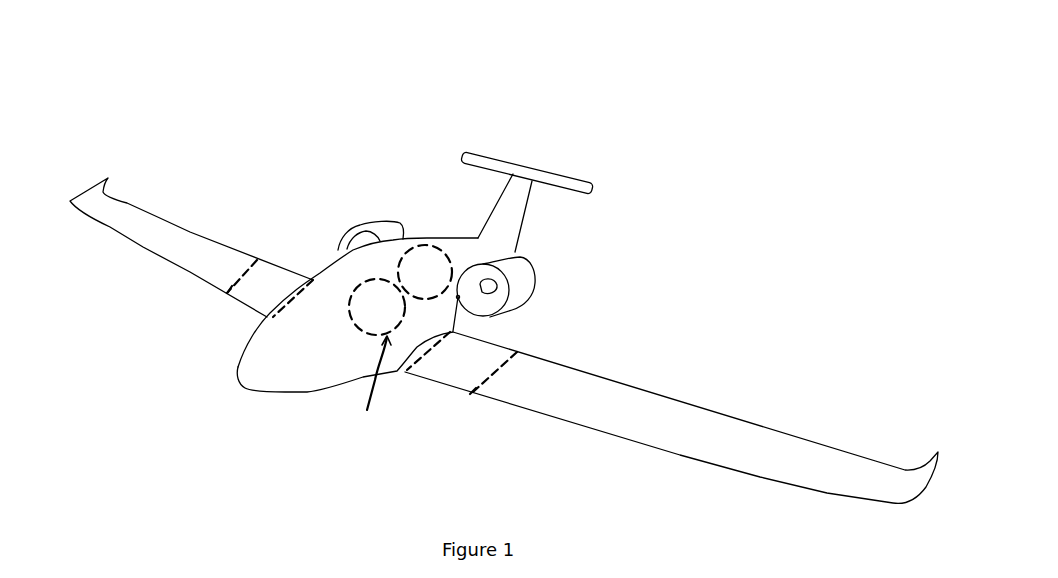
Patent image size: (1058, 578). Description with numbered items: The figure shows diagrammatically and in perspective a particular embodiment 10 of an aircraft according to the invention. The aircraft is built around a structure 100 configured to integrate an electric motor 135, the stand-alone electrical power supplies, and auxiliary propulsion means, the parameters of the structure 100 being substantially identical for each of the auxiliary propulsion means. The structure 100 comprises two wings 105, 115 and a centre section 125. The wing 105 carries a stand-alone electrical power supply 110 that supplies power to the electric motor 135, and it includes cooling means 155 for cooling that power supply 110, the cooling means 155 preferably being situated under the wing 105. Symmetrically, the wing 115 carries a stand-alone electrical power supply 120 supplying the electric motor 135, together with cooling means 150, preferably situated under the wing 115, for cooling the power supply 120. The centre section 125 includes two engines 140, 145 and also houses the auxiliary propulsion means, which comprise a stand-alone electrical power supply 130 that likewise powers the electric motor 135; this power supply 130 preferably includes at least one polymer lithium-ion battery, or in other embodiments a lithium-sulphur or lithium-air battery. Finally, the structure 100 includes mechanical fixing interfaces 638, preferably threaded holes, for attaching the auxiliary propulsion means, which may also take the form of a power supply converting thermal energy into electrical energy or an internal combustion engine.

The embodiment of an aircraft 10 is at (498, 95).
The structure 100 is at (525, 178).
The wing 105 is at (190, 267).
The stand-alone electrical power supply 110 is at (268, 277).
The wing 115 is at (577, 417).
The stand-alone electrical power supply 120 is at (440, 372).
The centre section 125 is at (255, 367).
The stand-alone electrical power supply of the auxiliary propulsion means 130 is at (363, 320).
The electric motor 135 is at (441, 244).
The engine 140 is at (525, 276).
The engine 145 is at (377, 223).
The cooling means 150 is at (472, 391).
The cooling means 155 is at (243, 310).
The mechanical fixing interfaces 638 is at (369, 388).